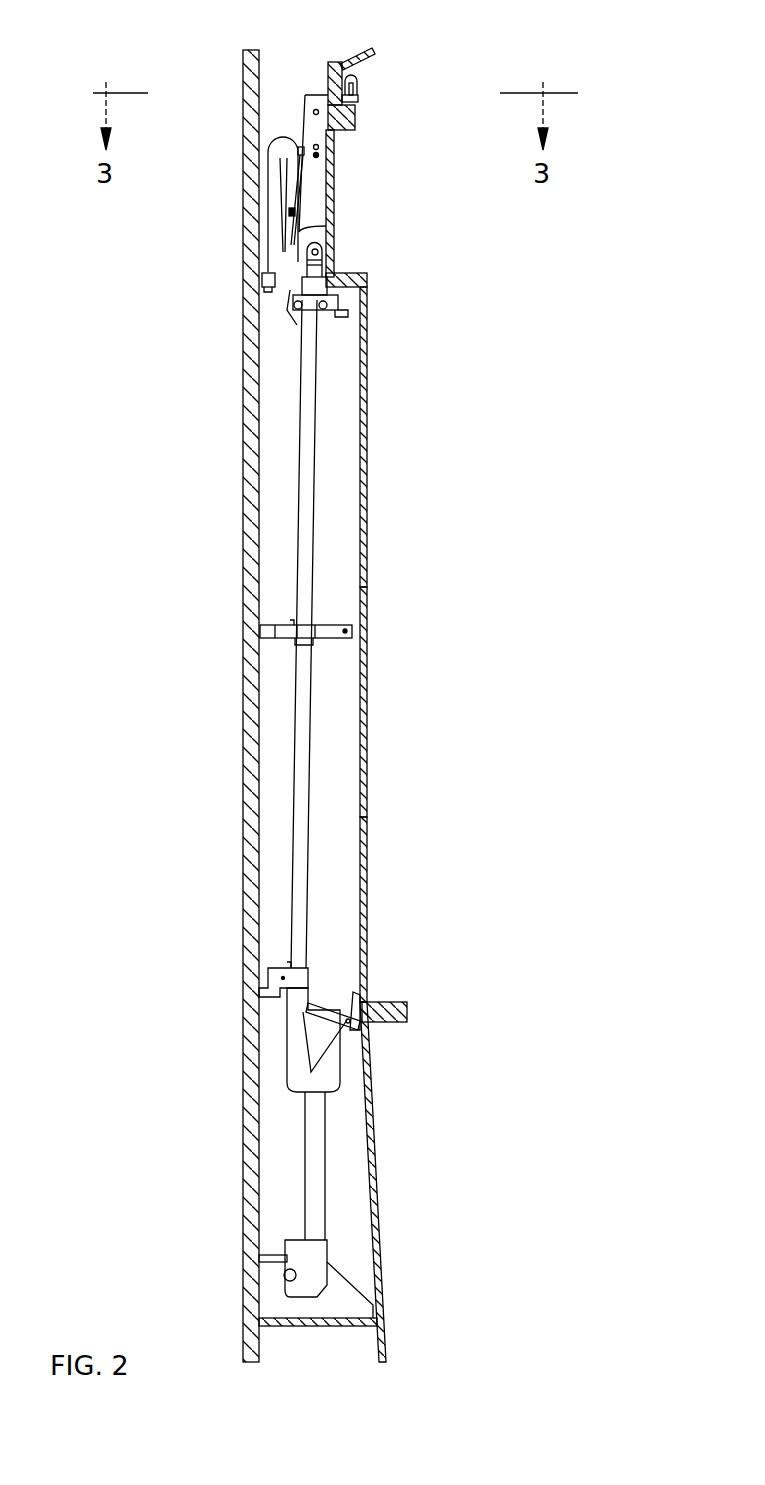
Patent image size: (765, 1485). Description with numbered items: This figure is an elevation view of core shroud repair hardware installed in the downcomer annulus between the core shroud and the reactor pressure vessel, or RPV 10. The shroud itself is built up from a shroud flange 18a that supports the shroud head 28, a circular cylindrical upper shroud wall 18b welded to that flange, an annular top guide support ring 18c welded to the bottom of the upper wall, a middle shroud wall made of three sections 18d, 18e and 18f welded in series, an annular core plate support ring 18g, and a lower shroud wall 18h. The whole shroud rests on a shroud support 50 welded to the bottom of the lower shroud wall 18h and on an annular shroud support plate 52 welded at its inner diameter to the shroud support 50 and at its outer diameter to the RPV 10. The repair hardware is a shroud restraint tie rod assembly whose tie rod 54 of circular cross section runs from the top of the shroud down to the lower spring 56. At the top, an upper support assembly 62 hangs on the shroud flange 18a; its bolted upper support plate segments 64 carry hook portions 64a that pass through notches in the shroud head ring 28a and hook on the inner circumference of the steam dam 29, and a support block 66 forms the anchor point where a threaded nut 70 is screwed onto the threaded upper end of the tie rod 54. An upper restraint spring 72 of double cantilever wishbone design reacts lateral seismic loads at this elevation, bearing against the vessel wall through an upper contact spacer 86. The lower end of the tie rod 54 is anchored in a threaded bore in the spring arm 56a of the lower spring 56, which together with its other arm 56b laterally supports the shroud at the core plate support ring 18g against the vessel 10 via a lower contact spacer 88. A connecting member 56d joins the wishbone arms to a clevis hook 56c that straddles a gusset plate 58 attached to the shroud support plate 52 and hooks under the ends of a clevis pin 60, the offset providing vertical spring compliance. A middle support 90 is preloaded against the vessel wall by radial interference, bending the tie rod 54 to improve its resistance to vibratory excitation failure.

The RPV 10 is at (243, 531).
The shroud flange 18a is at (357, 120).
The upper shroud wall 18b is at (336, 210).
The top guide support ring 18c is at (368, 280).
The middle shroud wall section 18d is at (368, 446).
The middle shroud wall section 18e is at (368, 681).
The middle shroud wall section 18f is at (368, 890).
The core plate support ring 18g is at (408, 1011).
The lower shroud wall 18h is at (376, 1200).
The shroud head 28 is at (338, 56).
The shroud head ring 28a is at (328, 75).
The steam dam 29 is at (356, 95).
The shroud support 50 is at (380, 1283).
The shroud support plate 52 is at (280, 1327).
The tie rod 54 is at (297, 778).
The lower spring 56 is at (298, 1179).
The spring arm 56a is at (287, 1058).
The spring arm 56b is at (338, 1055).
The clevis hook 56c is at (320, 1250).
The member 56d is at (318, 1149).
The gusset plate 58 is at (270, 1255).
The clevis pin 60 is at (284, 1274).
The upper support assembly 62 is at (298, 111).
The upper support plate 64 is at (313, 172).
The hook portion 64a is at (358, 80).
The support block 66 is at (343, 317).
The threaded nut 70 is at (318, 287).
The upper restraint spring 72 is at (275, 151).
The upper contact spacer 86 is at (262, 280).
The lower contact spacer 88 is at (278, 983).
The middle support 90 is at (336, 625).